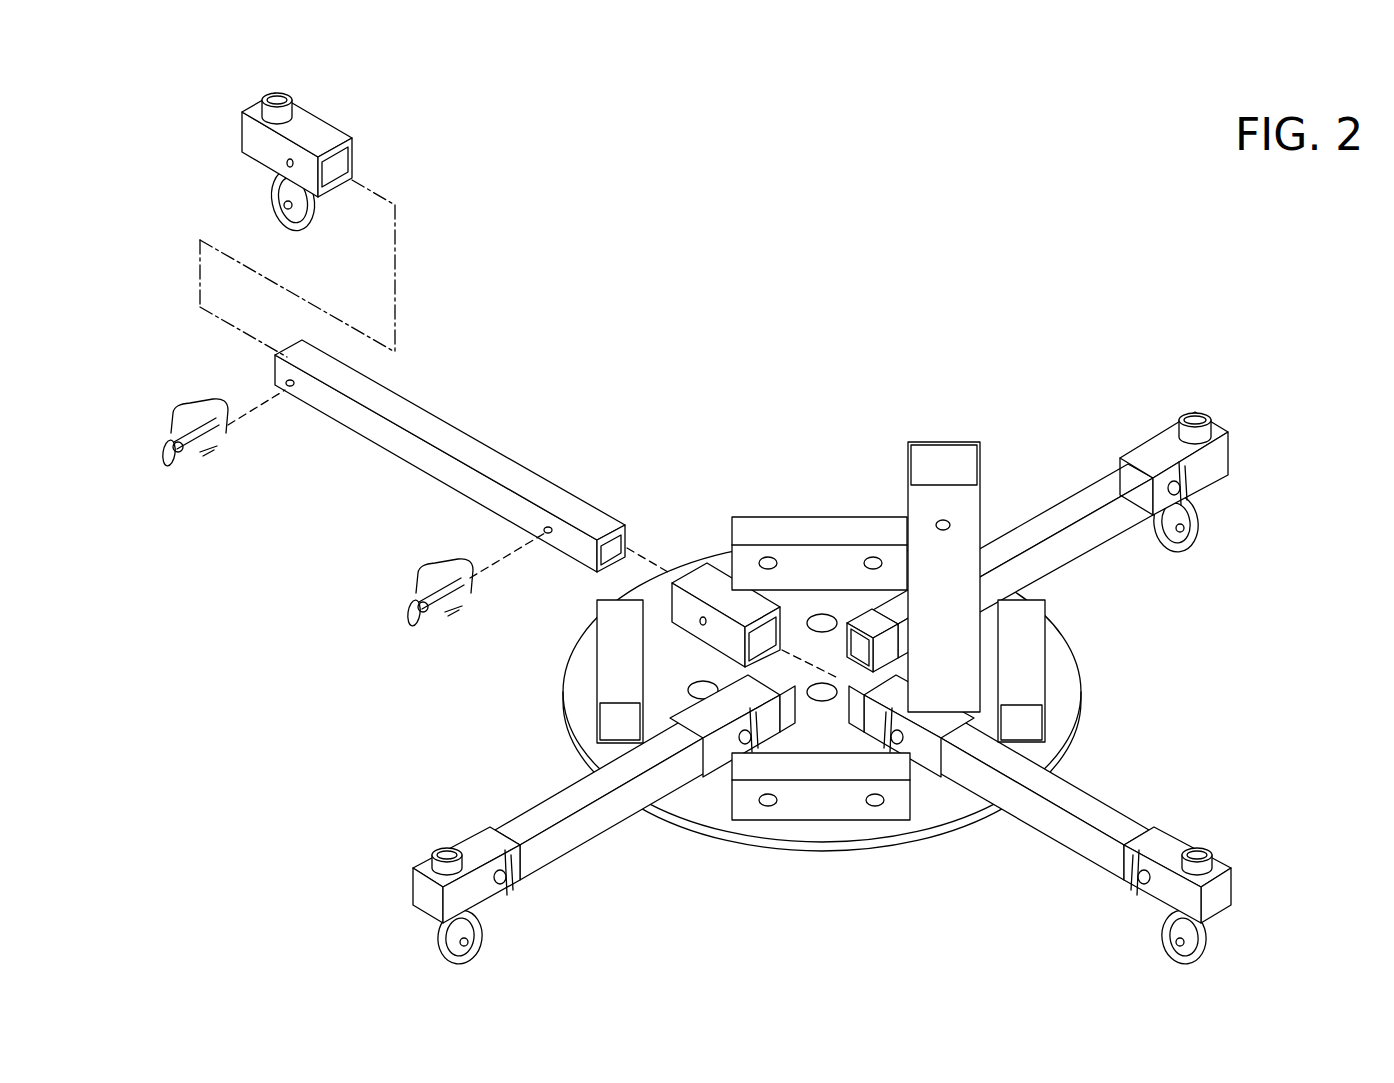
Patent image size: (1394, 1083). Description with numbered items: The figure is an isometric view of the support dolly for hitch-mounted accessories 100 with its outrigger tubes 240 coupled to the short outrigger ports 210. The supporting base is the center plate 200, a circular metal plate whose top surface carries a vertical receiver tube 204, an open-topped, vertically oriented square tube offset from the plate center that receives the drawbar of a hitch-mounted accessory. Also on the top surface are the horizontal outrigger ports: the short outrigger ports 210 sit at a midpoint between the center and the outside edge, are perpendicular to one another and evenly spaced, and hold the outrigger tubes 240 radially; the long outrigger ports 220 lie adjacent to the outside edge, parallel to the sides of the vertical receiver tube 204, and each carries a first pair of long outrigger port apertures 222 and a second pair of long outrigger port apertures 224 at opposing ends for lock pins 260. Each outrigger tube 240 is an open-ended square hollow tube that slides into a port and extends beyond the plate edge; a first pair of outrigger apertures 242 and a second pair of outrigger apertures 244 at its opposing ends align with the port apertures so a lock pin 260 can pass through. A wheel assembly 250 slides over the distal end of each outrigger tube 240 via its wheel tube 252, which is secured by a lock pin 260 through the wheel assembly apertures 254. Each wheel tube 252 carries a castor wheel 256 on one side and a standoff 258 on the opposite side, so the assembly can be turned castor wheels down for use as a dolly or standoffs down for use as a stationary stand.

The support dolly for hitch-mounted accessories 100 is at (672, 290).
The center plate 200 is at (985, 828).
The vertical receiver tube 204 is at (978, 440).
The short outrigger ports 210 is at (690, 580).
The long outrigger ports 220 is at (821, 684).
The first pair of long outrigger port apertures 222 is at (768, 806).
The second pair of long outrigger port apertures 224 is at (876, 806).
The outrigger tubes 240 is at (707, 555).
The first pair of outrigger apertures 242 is at (290, 390).
The second pair of outrigger apertures 244 is at (547, 536).
The wheel assemblies 250 is at (739, 515).
The wheel tube 252 is at (243, 125).
The wheel assembly apertures 254 is at (288, 165).
The castor wheel 256 is at (312, 220).
The standoff 258 is at (275, 104).
The lock pins 260 is at (166, 462).